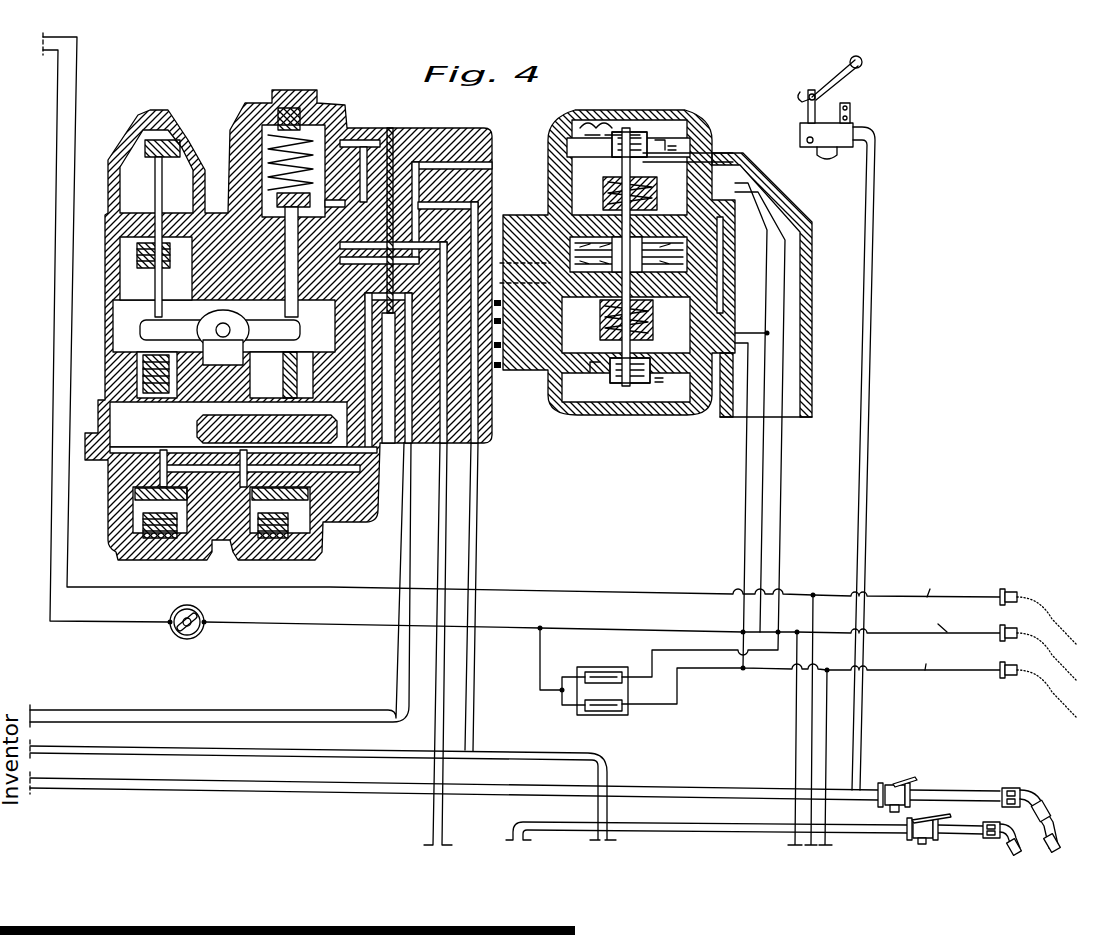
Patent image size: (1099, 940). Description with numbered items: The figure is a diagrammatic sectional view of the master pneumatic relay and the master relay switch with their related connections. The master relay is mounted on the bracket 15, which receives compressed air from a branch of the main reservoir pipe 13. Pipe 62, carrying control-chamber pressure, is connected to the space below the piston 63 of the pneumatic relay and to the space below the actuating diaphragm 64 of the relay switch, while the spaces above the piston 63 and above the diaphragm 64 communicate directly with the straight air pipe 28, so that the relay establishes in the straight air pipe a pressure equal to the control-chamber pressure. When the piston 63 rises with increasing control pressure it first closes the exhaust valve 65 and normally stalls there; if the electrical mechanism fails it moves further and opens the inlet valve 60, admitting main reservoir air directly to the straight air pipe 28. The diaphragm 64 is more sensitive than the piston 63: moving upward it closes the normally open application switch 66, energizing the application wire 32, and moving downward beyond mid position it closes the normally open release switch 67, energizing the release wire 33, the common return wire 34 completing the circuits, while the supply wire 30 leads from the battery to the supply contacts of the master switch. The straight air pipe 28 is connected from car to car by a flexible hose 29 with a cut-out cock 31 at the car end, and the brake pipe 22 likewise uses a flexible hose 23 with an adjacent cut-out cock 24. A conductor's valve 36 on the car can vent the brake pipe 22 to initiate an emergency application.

The main reservoir pipe 13 is at (75, 746).
The bracket of the master relay 15 is at (492, 423).
The brake pipe 22 is at (92, 783).
The flexible hose 23 is at (1053, 812).
The cut-out cock 24 is at (895, 784).
The straight air pipe 28 is at (448, 500).
The flexible hose 29 is at (997, 848).
The supply wire 30 is at (62, 82).
The cut-out cock 31 is at (910, 835).
The application wire 32 is at (785, 522).
The release wire 33 is at (746, 497).
The common return wire 34 is at (78, 50).
The conductor's valve 36 is at (800, 128).
The inlet valve 60 is at (347, 128).
The pipe 62 is at (270, 716).
The piston 63 is at (100, 405).
The actuating diaphragm 64 is at (722, 250).
The exhaust valve 65 is at (130, 148).
The application switch 66 is at (652, 140).
The release switch 67 is at (646, 393).